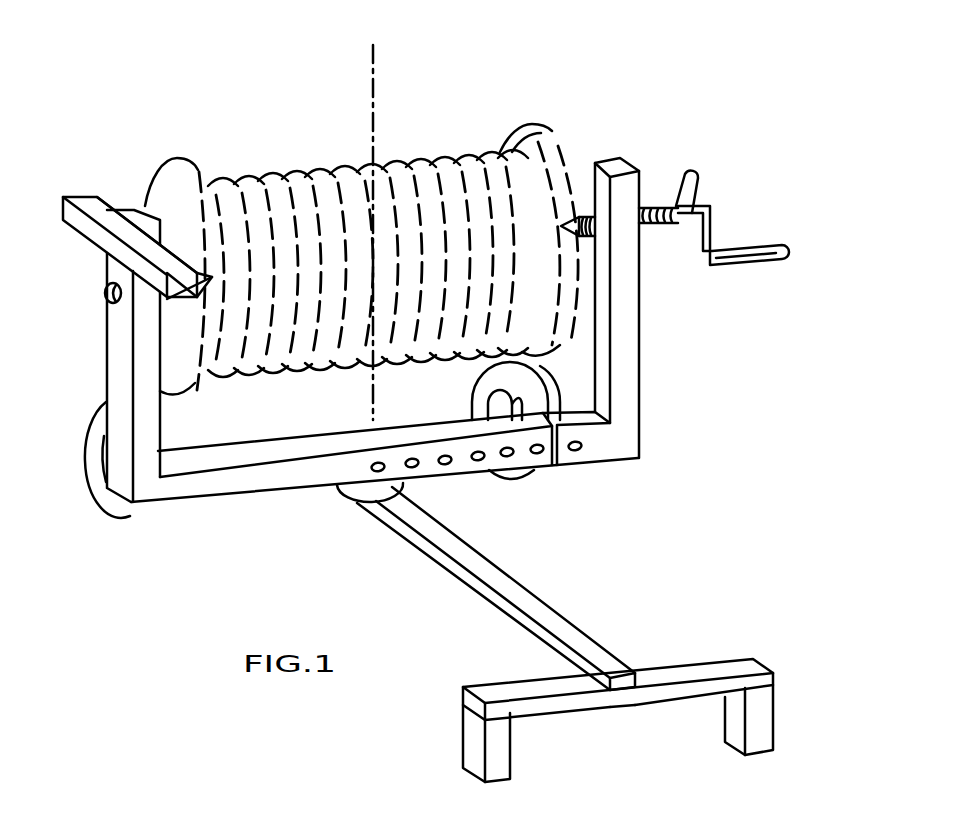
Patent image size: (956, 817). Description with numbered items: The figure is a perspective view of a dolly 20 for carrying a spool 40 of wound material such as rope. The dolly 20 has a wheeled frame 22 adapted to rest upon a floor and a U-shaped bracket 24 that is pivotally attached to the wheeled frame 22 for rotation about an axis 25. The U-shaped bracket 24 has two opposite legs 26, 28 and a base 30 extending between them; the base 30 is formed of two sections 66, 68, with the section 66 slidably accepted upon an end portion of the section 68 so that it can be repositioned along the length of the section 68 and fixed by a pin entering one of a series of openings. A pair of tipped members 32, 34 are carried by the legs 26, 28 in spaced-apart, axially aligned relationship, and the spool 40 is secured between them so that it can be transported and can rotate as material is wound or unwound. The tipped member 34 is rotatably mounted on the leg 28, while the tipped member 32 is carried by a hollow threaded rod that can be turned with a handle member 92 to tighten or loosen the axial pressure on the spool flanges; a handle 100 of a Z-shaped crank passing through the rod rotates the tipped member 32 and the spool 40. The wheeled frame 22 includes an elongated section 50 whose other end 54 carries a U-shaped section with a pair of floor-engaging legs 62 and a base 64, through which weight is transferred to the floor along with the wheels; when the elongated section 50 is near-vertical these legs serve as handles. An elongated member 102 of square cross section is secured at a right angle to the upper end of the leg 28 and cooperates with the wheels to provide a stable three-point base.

The dolly 20 is at (716, 543).
The wheeled frame 22 is at (487, 605).
The U-shaped bracket 24 is at (640, 342).
The axis 25 is at (372, 64).
The leg 26 is at (627, 408).
The leg 28 is at (118, 356).
The base 30 is at (490, 464).
The tipped member 32 is at (571, 236).
The tipped member 34 is at (173, 306).
The spool 40 is at (553, 124).
The elongated section 50 is at (705, 680).
The end 54 is at (575, 627).
The floor-engaging legs 62 is at (765, 718).
The base 64 is at (570, 717).
The section 66 is at (605, 450).
The section 68 is at (198, 488).
The handle member 92 is at (691, 172).
The handle 100 is at (778, 244).
The elongated member 102 is at (72, 212).